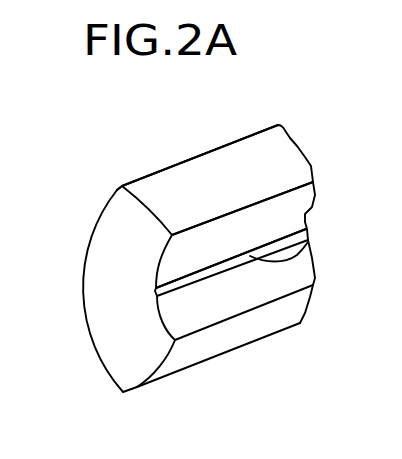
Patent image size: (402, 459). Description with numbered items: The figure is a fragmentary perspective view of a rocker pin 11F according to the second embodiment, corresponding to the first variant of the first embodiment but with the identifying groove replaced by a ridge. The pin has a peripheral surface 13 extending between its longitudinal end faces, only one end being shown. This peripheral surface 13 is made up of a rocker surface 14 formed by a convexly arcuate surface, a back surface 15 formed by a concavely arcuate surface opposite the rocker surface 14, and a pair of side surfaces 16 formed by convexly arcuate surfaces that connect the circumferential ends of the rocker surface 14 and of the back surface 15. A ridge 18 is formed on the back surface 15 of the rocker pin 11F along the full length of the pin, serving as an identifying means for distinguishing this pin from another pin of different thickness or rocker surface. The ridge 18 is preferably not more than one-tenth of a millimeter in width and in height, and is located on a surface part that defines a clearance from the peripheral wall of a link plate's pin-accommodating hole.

The rocker pin 11F is at (92, 206).
The peripheral surface 13 is at (276, 159).
The rocker surface 14 is at (82, 295).
The back surface 15 is at (286, 215).
The side surfaces 16 is at (188, 197).
The ridge 18 is at (308, 242).